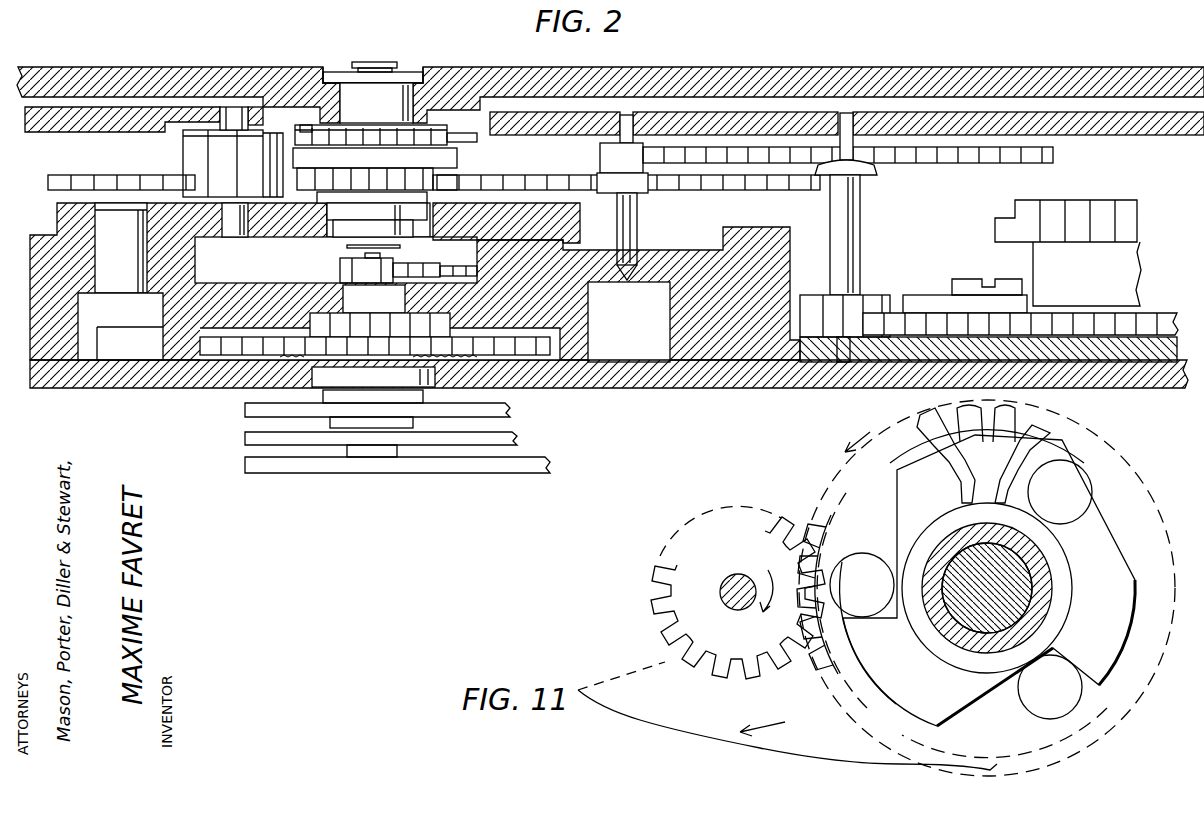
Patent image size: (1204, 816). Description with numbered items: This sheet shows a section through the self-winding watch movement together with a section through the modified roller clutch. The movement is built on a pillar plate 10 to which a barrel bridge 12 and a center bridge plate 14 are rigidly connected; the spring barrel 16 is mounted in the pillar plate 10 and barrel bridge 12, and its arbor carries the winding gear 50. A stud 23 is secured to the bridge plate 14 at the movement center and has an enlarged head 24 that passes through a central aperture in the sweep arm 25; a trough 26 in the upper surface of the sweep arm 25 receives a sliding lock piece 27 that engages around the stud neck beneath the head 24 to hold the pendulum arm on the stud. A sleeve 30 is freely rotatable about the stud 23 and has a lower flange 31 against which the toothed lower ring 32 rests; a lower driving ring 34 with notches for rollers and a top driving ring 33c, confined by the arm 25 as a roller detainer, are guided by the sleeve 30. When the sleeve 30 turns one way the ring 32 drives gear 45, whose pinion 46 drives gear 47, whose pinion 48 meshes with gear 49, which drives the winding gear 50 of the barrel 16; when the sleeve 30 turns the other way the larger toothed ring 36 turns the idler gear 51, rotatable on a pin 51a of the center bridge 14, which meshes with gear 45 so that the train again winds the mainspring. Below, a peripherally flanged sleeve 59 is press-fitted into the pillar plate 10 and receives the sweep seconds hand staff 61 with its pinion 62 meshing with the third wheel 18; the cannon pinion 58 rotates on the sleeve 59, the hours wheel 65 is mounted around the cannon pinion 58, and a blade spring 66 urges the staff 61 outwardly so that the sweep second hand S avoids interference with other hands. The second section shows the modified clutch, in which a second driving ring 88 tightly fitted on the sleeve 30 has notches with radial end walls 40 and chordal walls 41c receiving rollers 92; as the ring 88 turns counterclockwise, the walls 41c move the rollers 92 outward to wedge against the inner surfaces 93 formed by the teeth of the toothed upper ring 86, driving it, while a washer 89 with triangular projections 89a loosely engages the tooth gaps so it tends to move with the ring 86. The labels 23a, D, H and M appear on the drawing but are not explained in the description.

In FIG. 2, the pillar plate 10 is at (185, 305).
In FIG. 2, the barrel bridge 12 is at (36, 130).
In FIG. 2, the center bridge plate 14 is at (574, 224).
In FIG. 2, the spring barrel 16 is at (1038, 264).
In FIG. 2, the third wheel 18 is at (445, 268).
In FIG. 2, the stud 23 is at (320, 213).
In FIG. 11, the stud 23 is at (1025, 590).
In FIG. 2, the spindle shoulder 23a is at (338, 237).
In FIG. 2, the enlarged head 24 is at (363, 62).
In FIG. 2, the sweep arm 25 is at (708, 70).
In FIG. 2, the trough 26 is at (337, 66).
In FIG. 2, the sliding lock piece 27 is at (417, 72).
In FIG. 2, the sleeve 30 is at (405, 100).
In FIG. 11, the sleeve 30 is at (953, 546).
In FIG. 2, the lower flange 31 is at (426, 257).
In FIG. 2, the toothed lower ring 32 is at (440, 182).
In FIG. 2, the top driving ring 33c is at (305, 128).
In FIG. 2, the lower driving ring 34 is at (420, 160).
In FIG. 2, the toothed ring 36 is at (478, 141).
In FIG. 11, the radial end walls 40 is at (1042, 452).
In FIG. 11, the chordal wall 41c is at (900, 506).
In FIG. 2, the gear 45 is at (98, 176).
In FIG. 11, the gear 45 is at (632, 690).
In FIG. 2, the pinion 46 is at (600, 158).
In FIG. 2, the gear 47 is at (918, 165).
In FIG. 2, the pinion 48 is at (815, 295).
In FIG. 2, the gear 49 is at (918, 318).
In FIG. 2, the winding gear 50 is at (1163, 318).
In FIG. 2, the idler gear 51 is at (183, 158).
In FIG. 11, the idler gear 51 is at (752, 526).
In FIG. 2, the pin 51a is at (231, 236).
In FIG. 11, the pin 51a is at (735, 580).
In FIG. 2, the cannon pinion 58 is at (395, 333).
In FIG. 2, the peripherally flanged sleeve 59 is at (392, 290).
In FIG. 2, the sweep seconds hand staff 61 is at (365, 474).
In FIG. 2, the pinion 62 is at (340, 270).
In FIG. 2, the hours wheel 65 is at (538, 357).
In FIG. 2, the blade spring 66 is at (347, 247).
In FIG. 11, the toothed upper ring 86 is at (1118, 506).
In FIG. 11, the second driving ring 88 is at (1120, 652).
In FIG. 11, the washer 89 is at (930, 430).
In FIG. 11, the triangular projections 89a is at (1040, 435).
In FIG. 11, the rollers 92 is at (1072, 503).
In FIG. 11, the inner surfaces 93 is at (832, 540).
In FIG. 2, the base plate D is at (140, 380).
In FIG. 2, the hour arm H is at (245, 410).
In FIG. 2, the minute arm M is at (245, 438).
In FIG. 2, the sweep second hand S is at (245, 466).